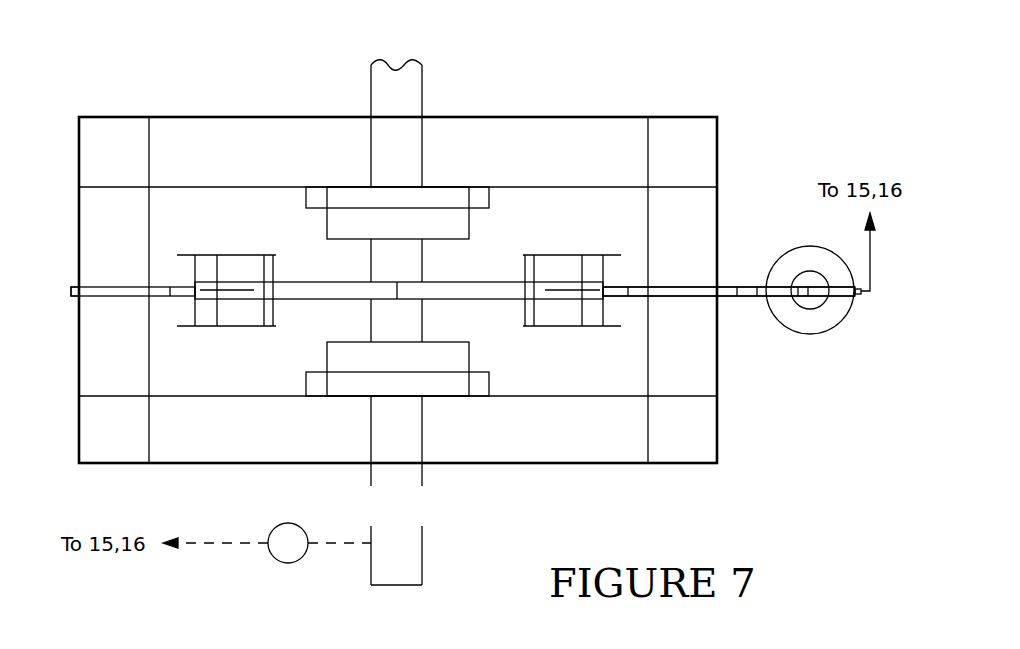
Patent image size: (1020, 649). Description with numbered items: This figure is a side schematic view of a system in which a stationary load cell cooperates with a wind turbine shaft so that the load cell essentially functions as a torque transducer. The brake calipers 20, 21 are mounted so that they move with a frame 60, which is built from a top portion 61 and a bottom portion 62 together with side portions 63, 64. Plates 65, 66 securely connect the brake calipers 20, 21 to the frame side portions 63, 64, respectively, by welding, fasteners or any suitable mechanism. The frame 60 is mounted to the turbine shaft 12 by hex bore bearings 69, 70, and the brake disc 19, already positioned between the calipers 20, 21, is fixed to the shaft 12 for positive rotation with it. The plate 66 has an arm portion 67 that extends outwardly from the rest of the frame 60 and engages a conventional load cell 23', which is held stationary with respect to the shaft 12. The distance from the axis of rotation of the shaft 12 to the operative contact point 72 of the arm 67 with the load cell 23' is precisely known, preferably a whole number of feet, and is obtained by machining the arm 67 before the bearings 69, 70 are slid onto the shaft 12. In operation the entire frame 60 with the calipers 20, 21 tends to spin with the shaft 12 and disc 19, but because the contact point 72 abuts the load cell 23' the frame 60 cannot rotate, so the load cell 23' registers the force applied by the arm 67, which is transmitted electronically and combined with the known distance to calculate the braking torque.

The frame 60 is at (107, 108).
The top portion 61 is at (232, 128).
The bottom portion 62 is at (288, 460).
The side portion 63 is at (103, 233).
The side portion 64 is at (708, 203).
The turbine shaft 12 is at (378, 93).
The hex bore bearing 69 is at (455, 200).
The hex bore bearing 70 is at (458, 363).
The brake disc 19 is at (487, 287).
The brake caliper 20 is at (242, 268).
The brake caliper 21 is at (563, 264).
The plate 65 is at (75, 297).
The plate 66 is at (637, 290).
The arm portion 67 is at (748, 293).
The load cell 23' is at (799, 270).
The contact point 72 is at (292, 558).